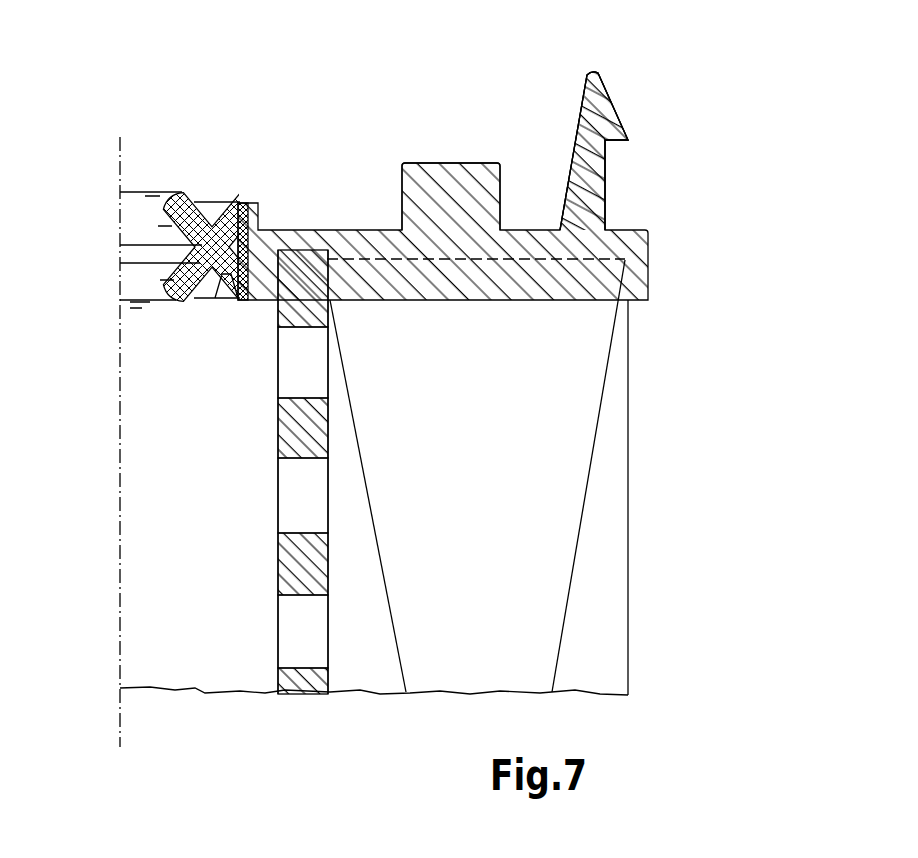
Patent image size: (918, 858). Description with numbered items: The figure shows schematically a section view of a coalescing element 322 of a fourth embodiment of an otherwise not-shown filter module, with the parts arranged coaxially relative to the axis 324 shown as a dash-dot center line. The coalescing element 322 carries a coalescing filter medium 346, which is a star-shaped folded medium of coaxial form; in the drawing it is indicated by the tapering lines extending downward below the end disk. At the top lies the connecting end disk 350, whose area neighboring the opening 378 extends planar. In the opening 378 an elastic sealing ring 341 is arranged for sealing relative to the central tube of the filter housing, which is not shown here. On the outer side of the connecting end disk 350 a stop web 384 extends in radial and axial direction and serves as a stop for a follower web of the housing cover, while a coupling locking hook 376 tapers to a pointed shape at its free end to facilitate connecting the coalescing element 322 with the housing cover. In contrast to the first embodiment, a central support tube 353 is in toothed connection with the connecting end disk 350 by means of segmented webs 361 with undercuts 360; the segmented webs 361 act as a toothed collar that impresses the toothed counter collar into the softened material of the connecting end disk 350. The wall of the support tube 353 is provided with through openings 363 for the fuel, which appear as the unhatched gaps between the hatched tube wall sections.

The coalescing element 322 is at (226, 110).
The axis 324 is at (116, 150).
The opening 378 is at (145, 227).
The elastic sealing ring 341 is at (167, 297).
The connecting end disk 350 is at (369, 220).
The stop web 384 is at (453, 183).
The coupling locking hook 376 is at (606, 113).
The segmented web 361 is at (288, 291).
The undercut 360 is at (270, 300).
The through opening 363 is at (307, 362).
The central support tube 353 is at (258, 531).
The coalescing filter medium 346 is at (605, 562).